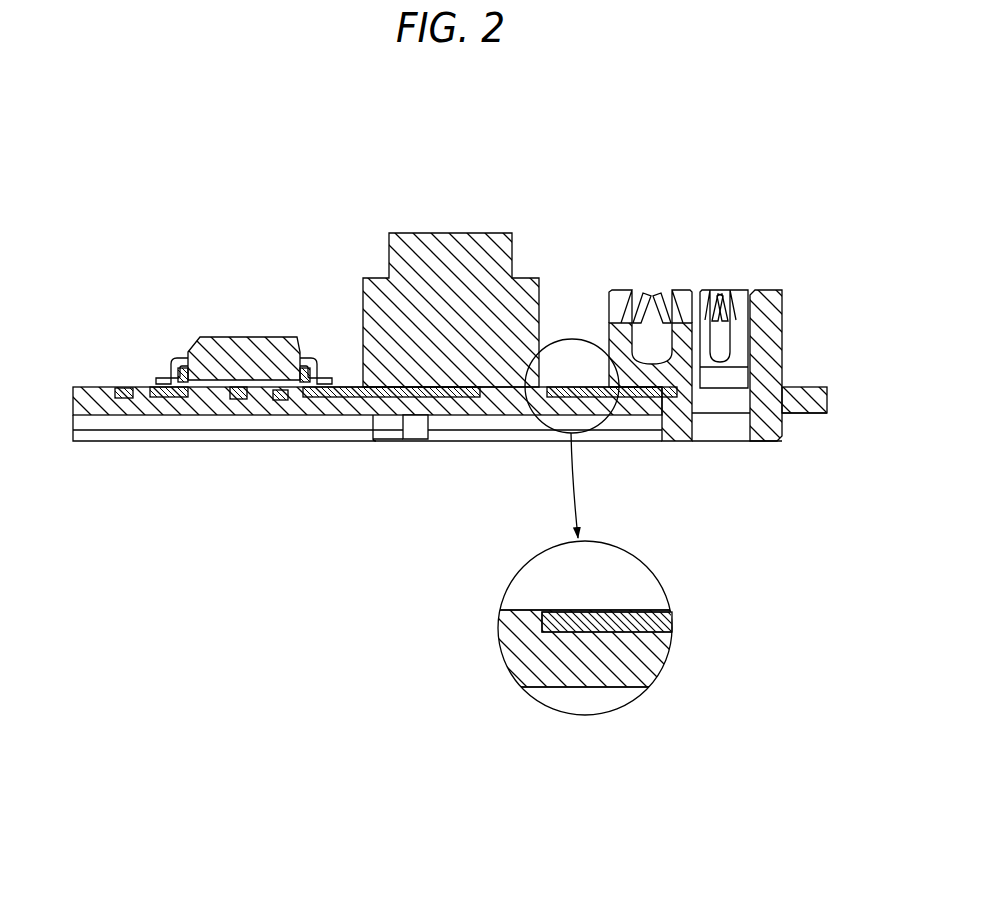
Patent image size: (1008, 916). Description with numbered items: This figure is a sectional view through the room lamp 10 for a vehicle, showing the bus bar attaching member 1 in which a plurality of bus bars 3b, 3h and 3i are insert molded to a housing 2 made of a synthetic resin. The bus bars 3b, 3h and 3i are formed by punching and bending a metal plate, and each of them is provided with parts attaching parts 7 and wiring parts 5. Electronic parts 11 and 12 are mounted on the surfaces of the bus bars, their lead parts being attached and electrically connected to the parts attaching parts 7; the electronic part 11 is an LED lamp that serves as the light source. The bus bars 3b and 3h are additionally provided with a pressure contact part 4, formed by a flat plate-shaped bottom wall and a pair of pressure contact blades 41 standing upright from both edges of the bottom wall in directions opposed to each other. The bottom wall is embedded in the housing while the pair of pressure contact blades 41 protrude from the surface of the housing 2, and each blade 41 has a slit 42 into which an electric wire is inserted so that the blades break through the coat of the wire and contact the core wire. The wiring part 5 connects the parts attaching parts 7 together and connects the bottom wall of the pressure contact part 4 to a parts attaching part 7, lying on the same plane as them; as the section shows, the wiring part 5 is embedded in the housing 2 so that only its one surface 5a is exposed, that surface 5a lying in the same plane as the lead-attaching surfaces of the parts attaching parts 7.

The bus bar attaching member 1 is at (100, 385).
The housing 2 is at (488, 410).
The bus bar 3b is at (122, 401).
The bus bar 3i is at (281, 402).
The bus bar 3h is at (624, 400).
The pressure contact part 4 is at (636, 285).
The pressure contact blade 41 is at (678, 297).
The slit 42 is at (650, 296).
The wiring part 5 is at (568, 384).
The one surface 5a is at (608, 612).
The parts attaching part 7 is at (158, 385).
The room lamp for a vehicle 10 is at (823, 124).
The electronic part 11 is at (485, 252).
The electronic part 12 is at (239, 320).